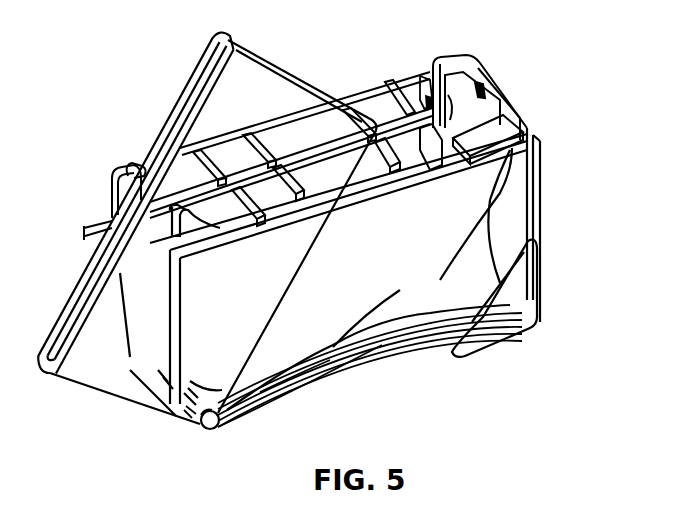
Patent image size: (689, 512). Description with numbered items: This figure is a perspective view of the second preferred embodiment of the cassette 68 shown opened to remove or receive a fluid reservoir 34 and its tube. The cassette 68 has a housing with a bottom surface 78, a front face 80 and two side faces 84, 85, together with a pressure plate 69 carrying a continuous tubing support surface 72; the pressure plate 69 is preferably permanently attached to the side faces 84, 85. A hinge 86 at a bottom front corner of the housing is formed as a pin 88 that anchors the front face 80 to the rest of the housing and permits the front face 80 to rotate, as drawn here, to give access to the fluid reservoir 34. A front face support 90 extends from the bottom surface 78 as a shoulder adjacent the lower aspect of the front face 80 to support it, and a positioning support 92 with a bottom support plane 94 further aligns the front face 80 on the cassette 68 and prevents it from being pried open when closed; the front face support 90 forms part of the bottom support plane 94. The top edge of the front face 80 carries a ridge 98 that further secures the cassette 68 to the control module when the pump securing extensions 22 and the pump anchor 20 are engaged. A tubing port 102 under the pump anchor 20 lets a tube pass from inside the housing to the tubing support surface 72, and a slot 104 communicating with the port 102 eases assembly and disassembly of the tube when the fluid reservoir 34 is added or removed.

The pump anchor 20 is at (443, 68).
The pump securing extension 22 is at (137, 168).
The fluid reservoir 34 is at (493, 197).
The cassette 68 is at (568, 250).
The pressure plate 69 is at (370, 82).
The tubing support surface 72 is at (372, 102).
The bottom surface 78 is at (385, 370).
The front face 80 is at (268, 92).
The side face 84 is at (113, 197).
The side face 85 is at (543, 167).
The hinge 86 is at (207, 428).
The pin 88 is at (178, 418).
The front face support 90 is at (295, 390).
The positioning support 92 is at (526, 300).
The bottom support plane 94 is at (250, 425).
The ridge 98 is at (205, 68).
The tubing port 102 is at (482, 100).
The slot 104 is at (428, 108).